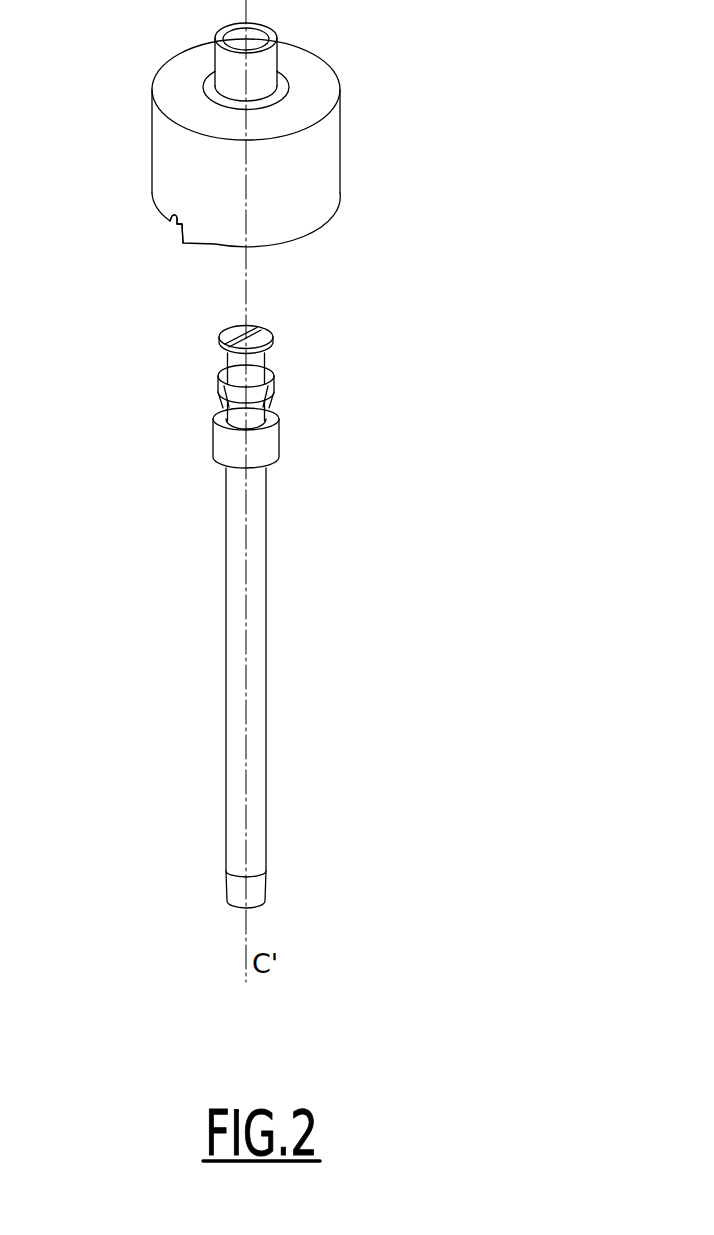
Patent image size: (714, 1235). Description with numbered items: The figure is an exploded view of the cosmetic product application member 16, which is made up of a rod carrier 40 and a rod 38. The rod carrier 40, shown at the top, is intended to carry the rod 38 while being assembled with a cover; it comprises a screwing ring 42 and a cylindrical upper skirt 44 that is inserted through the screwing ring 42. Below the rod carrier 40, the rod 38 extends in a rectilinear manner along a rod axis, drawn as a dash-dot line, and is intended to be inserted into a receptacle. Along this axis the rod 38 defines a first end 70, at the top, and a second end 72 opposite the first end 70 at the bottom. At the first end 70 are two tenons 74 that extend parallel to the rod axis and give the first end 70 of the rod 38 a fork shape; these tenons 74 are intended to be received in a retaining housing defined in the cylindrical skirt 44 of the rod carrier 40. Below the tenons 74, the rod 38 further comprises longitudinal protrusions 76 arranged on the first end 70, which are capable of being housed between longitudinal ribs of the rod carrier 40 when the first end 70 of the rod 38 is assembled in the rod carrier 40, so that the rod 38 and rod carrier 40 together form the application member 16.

The cosmetic product application member 16 is at (283, 134).
The rod carrier 40 is at (330, 160).
The screwing ring 42 is at (180, 168).
The cylindrical upper skirt 44 is at (261, 75).
The first end 70 is at (316, 364).
The tenons 74 is at (266, 333).
The longitudinal protrusions 76 is at (272, 393).
The rod 38 is at (317, 697).
The second end 72 is at (290, 895).